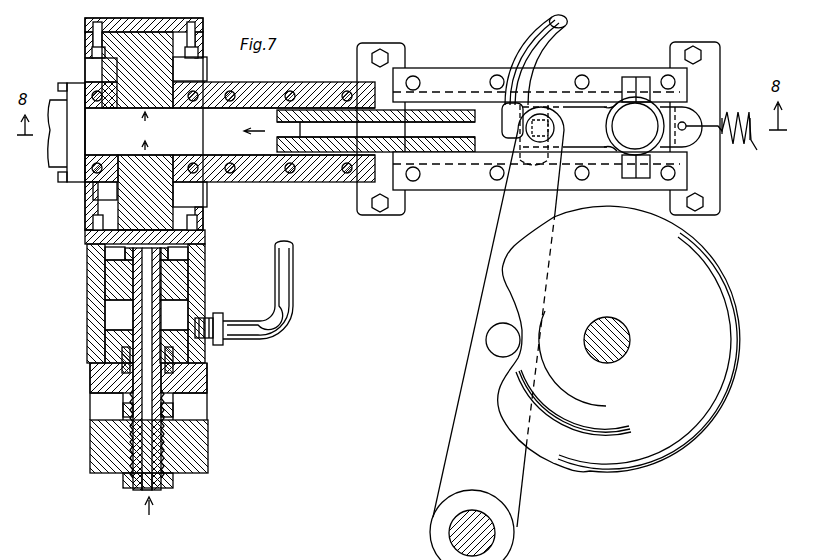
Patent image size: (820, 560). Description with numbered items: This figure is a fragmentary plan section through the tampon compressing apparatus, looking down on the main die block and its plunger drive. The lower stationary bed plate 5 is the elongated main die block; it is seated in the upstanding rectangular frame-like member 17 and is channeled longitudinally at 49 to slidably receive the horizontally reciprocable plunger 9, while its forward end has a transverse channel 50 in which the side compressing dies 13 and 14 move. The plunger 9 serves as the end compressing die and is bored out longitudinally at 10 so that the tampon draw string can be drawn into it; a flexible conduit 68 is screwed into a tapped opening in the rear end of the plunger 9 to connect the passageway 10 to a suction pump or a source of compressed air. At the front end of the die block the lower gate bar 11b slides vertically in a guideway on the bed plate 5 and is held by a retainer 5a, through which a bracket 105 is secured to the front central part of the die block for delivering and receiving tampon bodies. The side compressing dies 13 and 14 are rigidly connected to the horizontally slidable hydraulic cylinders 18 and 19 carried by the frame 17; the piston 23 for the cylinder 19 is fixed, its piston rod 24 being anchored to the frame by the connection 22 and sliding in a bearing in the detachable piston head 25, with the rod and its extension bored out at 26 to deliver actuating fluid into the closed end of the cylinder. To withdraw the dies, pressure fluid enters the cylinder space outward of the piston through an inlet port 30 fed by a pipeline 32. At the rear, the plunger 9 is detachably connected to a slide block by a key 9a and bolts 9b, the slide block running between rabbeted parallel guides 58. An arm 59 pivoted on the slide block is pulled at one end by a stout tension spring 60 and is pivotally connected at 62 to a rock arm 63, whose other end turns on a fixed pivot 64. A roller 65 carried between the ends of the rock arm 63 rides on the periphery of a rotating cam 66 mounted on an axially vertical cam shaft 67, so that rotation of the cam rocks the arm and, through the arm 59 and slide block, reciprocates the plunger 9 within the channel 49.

The bed plate 5 is at (278, 180).
The retainer 5a is at (80, 183).
The plunger 9 is at (330, 150).
The key 9a is at (596, 127).
The bolts 9b is at (533, 143).
The bore 10 is at (425, 125).
The lower gate bar 11b is at (92, 138).
The side compressing die 13 is at (120, 82).
The side compressing die 14 is at (128, 190).
The rectangular frame-like member 17 is at (205, 430).
The hydraulic cylinder 18 is at (88, 22).
The hydraulic cylinder 19 is at (205, 355).
The anchoring connection 22 is at (112, 410).
The piston 23 is at (190, 252).
The piston rod 24 is at (146, 315).
The piston head 25 is at (205, 375).
The bore 26 is at (140, 318).
The inlet port 30 is at (210, 315).
The pipeline 32 is at (292, 295).
The longitudinal channel 49 is at (250, 150).
The transverse channel 50 is at (178, 83).
The parallel guides 58 is at (652, 70).
The arm 59 is at (598, 103).
The tension spring 60 is at (750, 145).
The pivotal connection 62 is at (543, 115).
The rock arm 63 is at (462, 416).
The fixed pivot 64 is at (497, 533).
The roller 65 is at (486, 340).
The cam 66 is at (582, 470).
The cam shaft 67 is at (630, 338).
The flexible conduit 68 is at (534, 50).
The bracket 105 is at (70, 98).